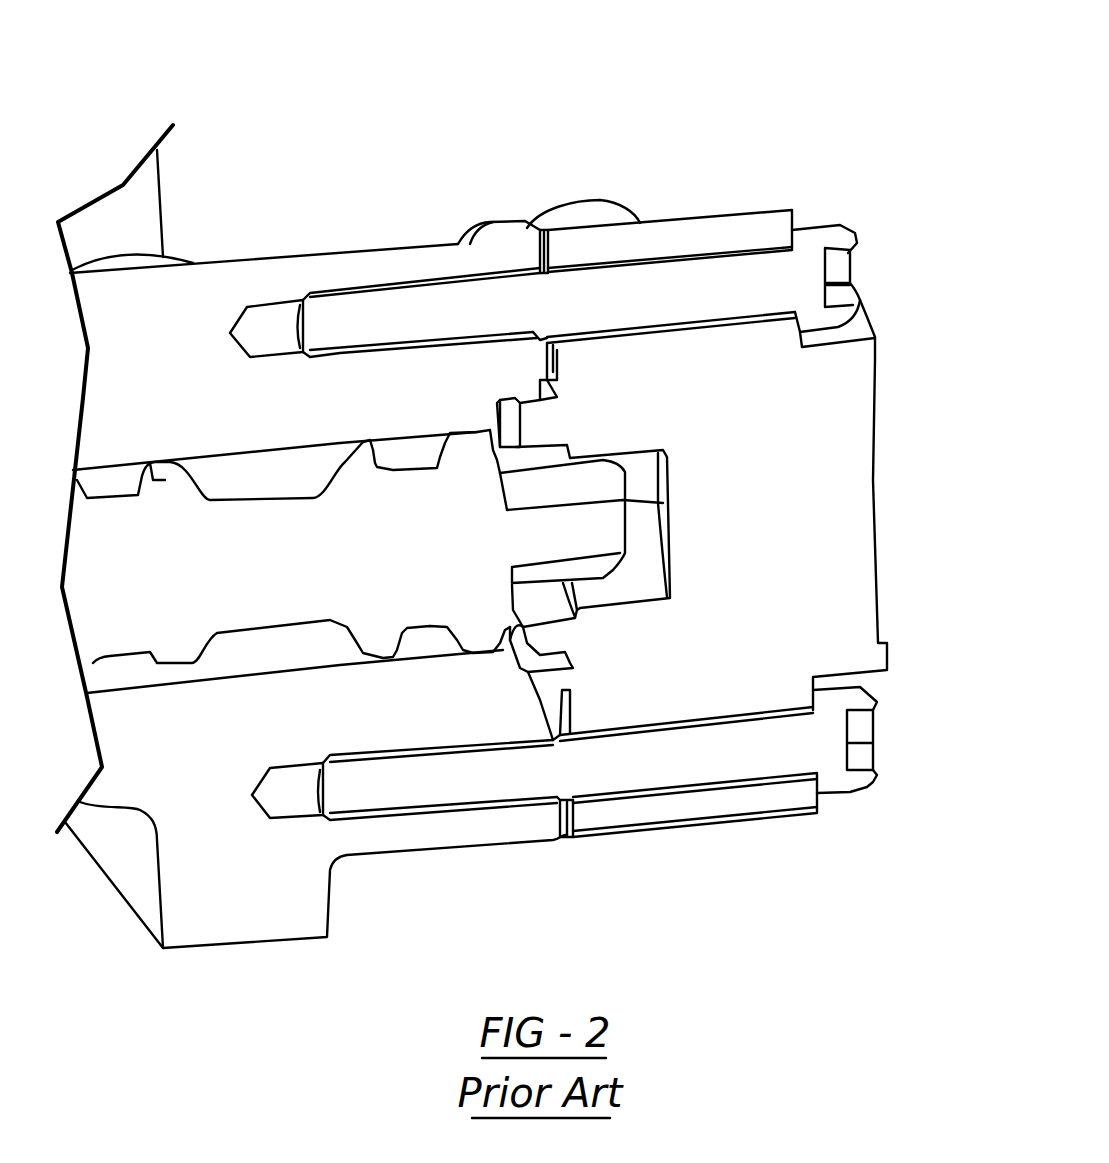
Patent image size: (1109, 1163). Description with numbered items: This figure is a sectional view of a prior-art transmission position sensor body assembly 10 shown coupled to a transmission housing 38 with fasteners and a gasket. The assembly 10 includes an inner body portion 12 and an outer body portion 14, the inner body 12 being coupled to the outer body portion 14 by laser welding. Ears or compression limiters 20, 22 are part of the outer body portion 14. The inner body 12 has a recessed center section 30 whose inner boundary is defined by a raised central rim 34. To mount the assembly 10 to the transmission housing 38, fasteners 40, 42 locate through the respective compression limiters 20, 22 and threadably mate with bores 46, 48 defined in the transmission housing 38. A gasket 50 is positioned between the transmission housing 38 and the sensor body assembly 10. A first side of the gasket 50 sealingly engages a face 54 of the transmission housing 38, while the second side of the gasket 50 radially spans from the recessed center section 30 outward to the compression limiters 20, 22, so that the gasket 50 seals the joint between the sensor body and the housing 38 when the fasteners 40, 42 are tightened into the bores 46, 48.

The transmission position sensor body assembly 10 is at (774, 78).
The inner body portion 12 is at (613, 638).
The outer body portion 14 is at (692, 685).
The compression limiter 20 is at (667, 237).
The compression limiter 22 is at (700, 810).
The recessed center section 30 is at (585, 380).
The raised central rim 34 is at (524, 647).
The transmission housing 38 is at (265, 282).
The fastener 40 is at (593, 297).
The fastener 42 is at (627, 757).
The bore 46 is at (390, 292).
The bore 48 is at (402, 810).
The gasket 50 is at (558, 258).
The face 54 is at (572, 243).